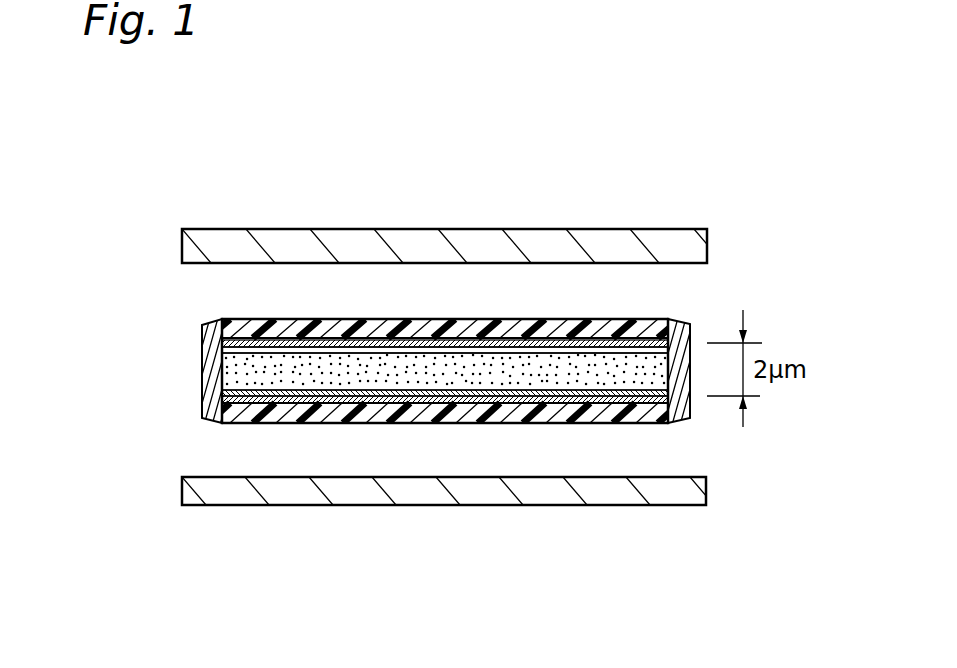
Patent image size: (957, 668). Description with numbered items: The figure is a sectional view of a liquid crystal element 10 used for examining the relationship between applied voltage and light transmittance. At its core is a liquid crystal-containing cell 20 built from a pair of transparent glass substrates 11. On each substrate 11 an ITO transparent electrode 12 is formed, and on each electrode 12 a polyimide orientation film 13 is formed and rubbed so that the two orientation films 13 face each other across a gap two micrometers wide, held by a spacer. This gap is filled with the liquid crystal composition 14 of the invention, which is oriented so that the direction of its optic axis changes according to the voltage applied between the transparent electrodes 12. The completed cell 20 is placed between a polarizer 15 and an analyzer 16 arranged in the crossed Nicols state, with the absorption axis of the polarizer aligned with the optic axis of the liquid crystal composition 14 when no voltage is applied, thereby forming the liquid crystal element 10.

The piezoelectric element assembly 10 is at (88, 186).
The transparent substrate 11 is at (253, 347).
The transparent electrode 12 is at (273, 345).
The orientation film 13 is at (303, 333).
The liquid crystal composition 14 is at (254, 373).
The upper plate 15 is at (605, 233).
The lower plate 16 is at (415, 493).
The liquid crystal-containing cell 20 is at (118, 315).